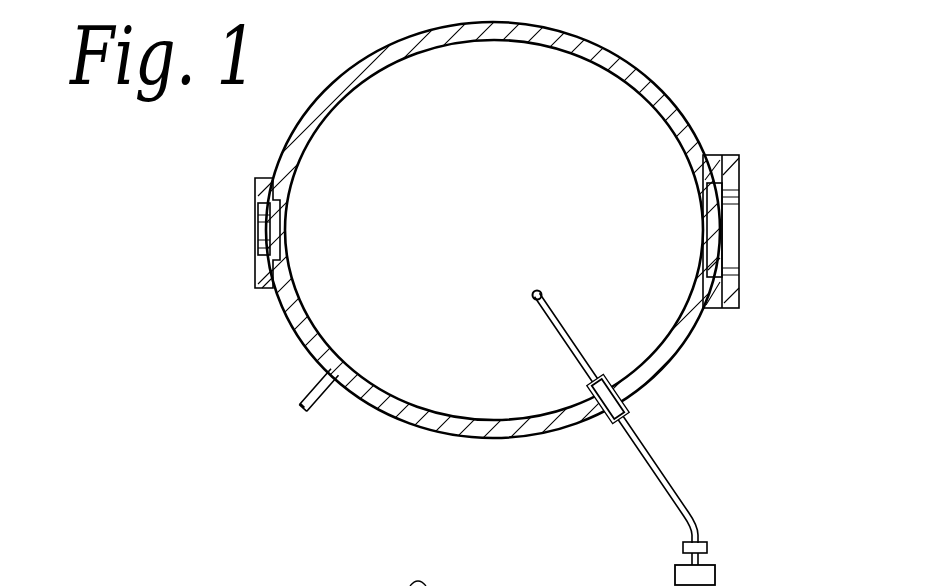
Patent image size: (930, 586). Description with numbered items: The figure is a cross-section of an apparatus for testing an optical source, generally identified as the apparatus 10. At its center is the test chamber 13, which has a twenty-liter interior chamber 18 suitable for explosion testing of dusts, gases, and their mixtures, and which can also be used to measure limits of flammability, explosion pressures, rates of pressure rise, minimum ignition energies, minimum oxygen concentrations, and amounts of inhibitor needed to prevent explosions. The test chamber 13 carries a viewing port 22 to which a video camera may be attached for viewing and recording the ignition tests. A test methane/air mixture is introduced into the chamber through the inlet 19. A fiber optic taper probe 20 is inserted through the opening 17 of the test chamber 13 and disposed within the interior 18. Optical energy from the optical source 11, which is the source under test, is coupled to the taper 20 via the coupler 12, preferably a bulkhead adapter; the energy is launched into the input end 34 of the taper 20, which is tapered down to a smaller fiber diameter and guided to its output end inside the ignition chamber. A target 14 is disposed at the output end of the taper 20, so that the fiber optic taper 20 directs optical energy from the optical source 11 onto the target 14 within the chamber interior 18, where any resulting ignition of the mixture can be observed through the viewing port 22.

The apparatus for testing an optical source 10 is at (236, 414).
The optical source 11 is at (715, 572).
The coupler 12 is at (683, 545).
The test chamber 13 is at (640, 73).
The target 14 is at (537, 289).
The opening 17 is at (627, 403).
The interior chamber 18 is at (434, 216).
The inlet 19 is at (302, 410).
The fiber optic taper probe 20 is at (641, 392).
The viewing port 22 is at (740, 224).
The input end 34 is at (430, 585).